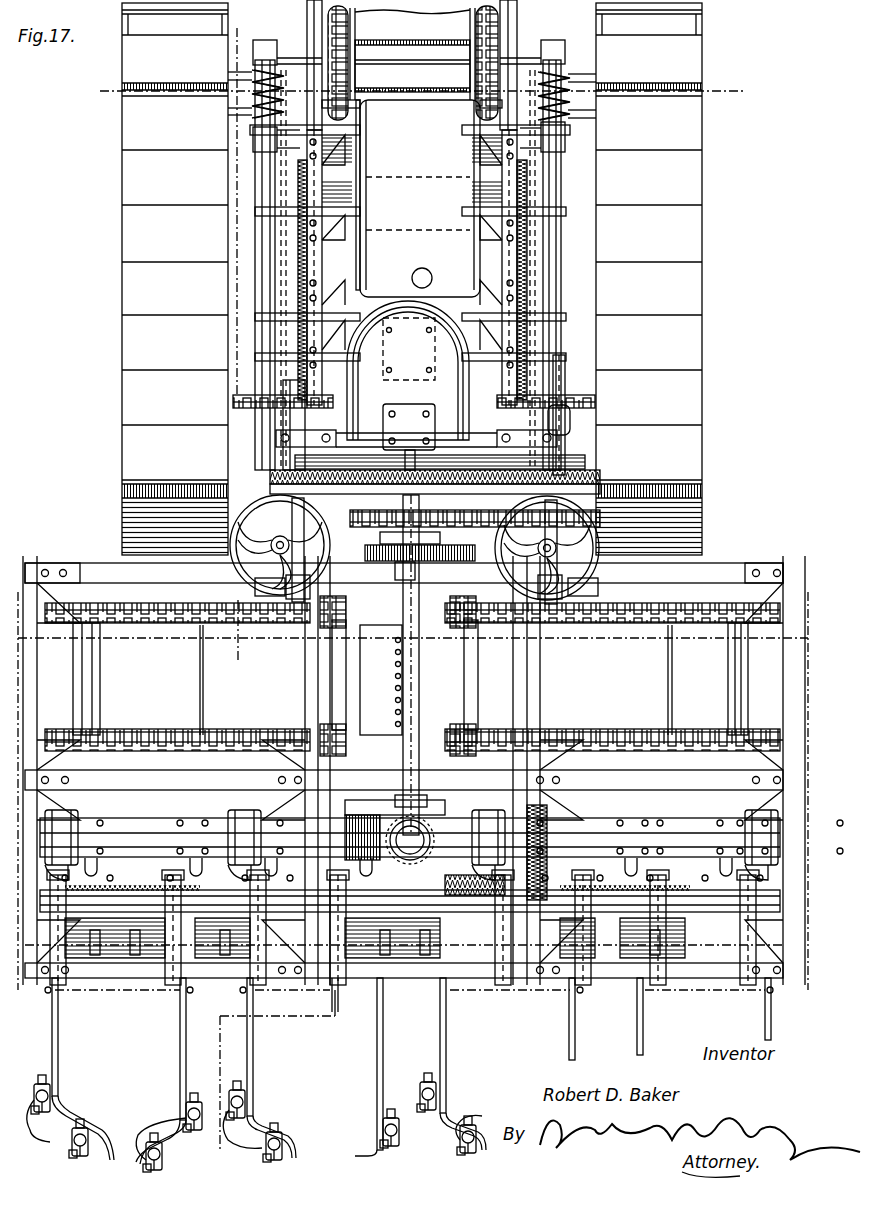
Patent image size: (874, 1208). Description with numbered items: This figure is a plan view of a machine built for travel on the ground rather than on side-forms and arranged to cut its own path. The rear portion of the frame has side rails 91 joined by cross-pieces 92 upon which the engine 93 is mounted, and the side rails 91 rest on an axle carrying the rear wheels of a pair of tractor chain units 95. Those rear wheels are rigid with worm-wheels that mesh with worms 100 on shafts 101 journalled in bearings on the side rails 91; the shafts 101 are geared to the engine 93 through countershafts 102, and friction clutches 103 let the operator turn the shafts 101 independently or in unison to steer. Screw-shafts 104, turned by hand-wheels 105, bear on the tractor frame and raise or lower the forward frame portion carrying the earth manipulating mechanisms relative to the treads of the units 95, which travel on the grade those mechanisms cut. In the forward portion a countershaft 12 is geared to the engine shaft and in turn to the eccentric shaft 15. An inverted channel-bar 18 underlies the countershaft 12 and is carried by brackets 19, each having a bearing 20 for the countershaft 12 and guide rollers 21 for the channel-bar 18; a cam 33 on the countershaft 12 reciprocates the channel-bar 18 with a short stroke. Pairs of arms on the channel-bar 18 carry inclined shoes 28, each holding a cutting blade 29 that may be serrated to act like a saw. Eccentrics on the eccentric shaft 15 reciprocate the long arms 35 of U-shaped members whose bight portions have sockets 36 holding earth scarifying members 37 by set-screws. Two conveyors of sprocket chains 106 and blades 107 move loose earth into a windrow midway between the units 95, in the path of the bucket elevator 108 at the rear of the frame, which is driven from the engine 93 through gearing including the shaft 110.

The countershaft 12 is at (125, 838).
The eccentric shaft 15 is at (480, 900).
The inverted channel-bar 18 is at (384, 524).
The brackets 19 is at (268, 26).
The bearing 20 is at (18, 592).
The guide rollers 21 is at (98, 62).
The shoe 28 is at (160, 858).
The cutting blade 29 is at (150, 888).
The cam 33 is at (330, 812).
The long arms 35 is at (58, 1047).
The sockets 36 is at (70, 1141).
The earth scarifying members 37 is at (52, 1088).
The side rails 91 is at (320, 386).
The cross-pieces 92 is at (352, 134).
The engine 93 is at (368, 263).
The tractor chain units 95 is at (122, 216).
The worms 100 is at (256, 98).
The shafts 101 is at (262, 292).
The countershafts 102 is at (296, 386).
The friction clutches 103 is at (498, 512).
The screw-shafts 104 is at (275, 548).
The hand-wheels 105 is at (300, 512).
The sprocket chains 106 is at (156, 628).
The blades 107 is at (200, 684).
The bucket elevator 108 is at (338, 24).
The shaft 110 is at (560, 366).